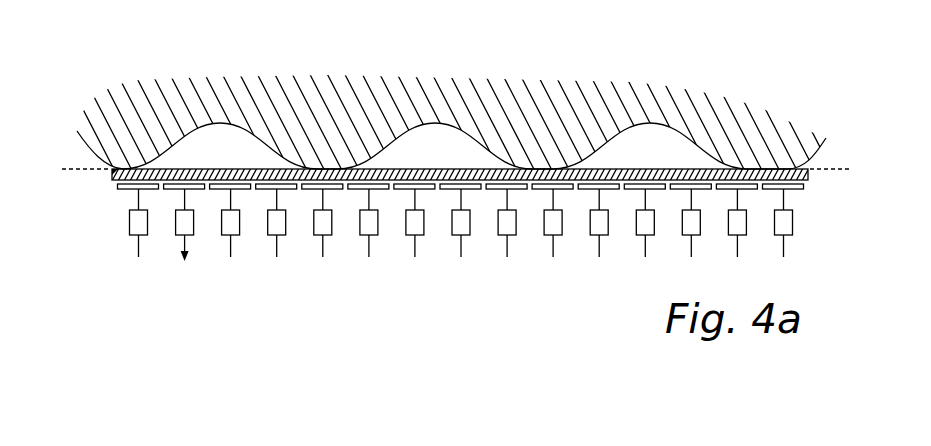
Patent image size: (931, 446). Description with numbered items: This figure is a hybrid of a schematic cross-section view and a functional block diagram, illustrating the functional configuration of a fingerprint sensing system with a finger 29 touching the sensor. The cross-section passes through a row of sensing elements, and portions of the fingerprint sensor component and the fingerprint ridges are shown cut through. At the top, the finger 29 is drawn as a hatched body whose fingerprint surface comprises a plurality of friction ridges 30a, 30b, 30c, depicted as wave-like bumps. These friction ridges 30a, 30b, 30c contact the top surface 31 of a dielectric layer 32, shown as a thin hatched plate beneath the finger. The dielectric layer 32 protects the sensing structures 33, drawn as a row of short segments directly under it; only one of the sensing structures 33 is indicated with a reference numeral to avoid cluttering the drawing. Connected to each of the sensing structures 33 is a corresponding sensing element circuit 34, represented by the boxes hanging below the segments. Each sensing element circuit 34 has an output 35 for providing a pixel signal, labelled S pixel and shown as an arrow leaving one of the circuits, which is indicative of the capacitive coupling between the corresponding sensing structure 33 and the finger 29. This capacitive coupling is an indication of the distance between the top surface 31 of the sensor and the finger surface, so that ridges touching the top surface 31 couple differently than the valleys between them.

The finger 29 is at (433, 53).
The friction ridge 30a is at (142, 139).
The friction ridge 30b is at (343, 139).
The friction ridge 30c is at (562, 139).
The top surface 31 is at (224, 170).
The dielectric layer 32 is at (113, 171).
The sensing structure 33 is at (198, 190).
The sensing element circuit 34 is at (176, 223).
The output 35 is at (190, 239).